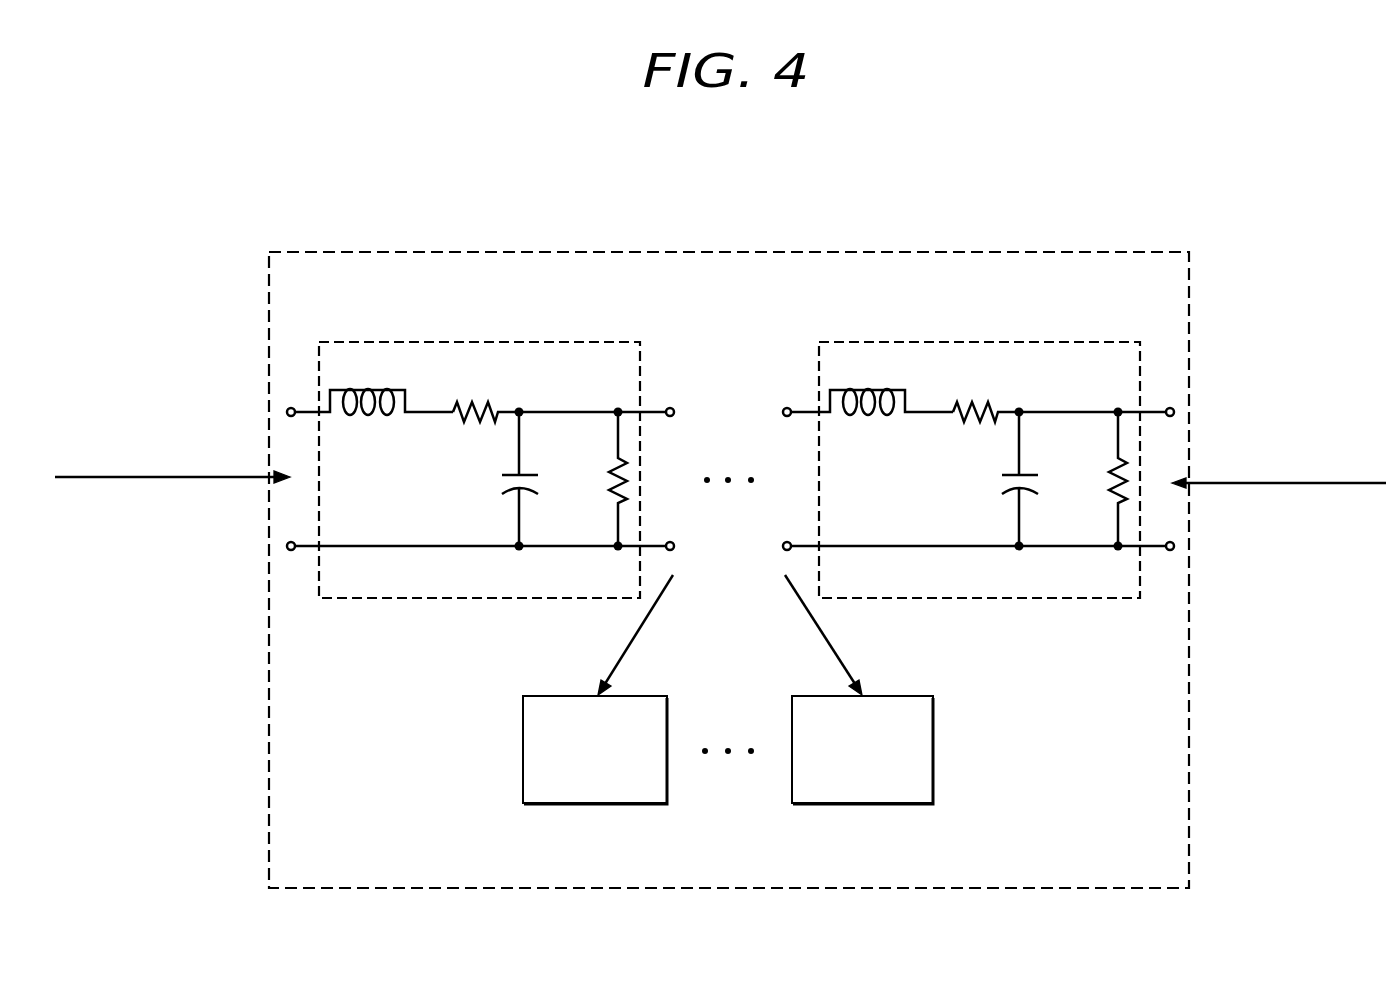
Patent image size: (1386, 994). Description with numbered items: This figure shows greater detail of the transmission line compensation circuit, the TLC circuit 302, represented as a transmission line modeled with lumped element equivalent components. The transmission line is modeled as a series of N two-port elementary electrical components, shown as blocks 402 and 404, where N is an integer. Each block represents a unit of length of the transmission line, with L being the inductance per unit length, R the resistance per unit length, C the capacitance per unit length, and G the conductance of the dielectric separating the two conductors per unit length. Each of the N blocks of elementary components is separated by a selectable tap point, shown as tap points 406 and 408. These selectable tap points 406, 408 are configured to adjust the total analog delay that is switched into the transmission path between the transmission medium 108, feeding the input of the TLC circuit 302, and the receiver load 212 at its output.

The TLC circuit 302 is at (733, 250).
The two-port elementary electrical component 402 is at (484, 340).
The two-port elementary electrical component 404 is at (984, 340).
The selectable tap point 406 is at (551, 694).
The selectable tap point 408 is at (911, 694).
The transmission medium 108 is at (172, 419).
The receiver load 212 is at (1279, 424).